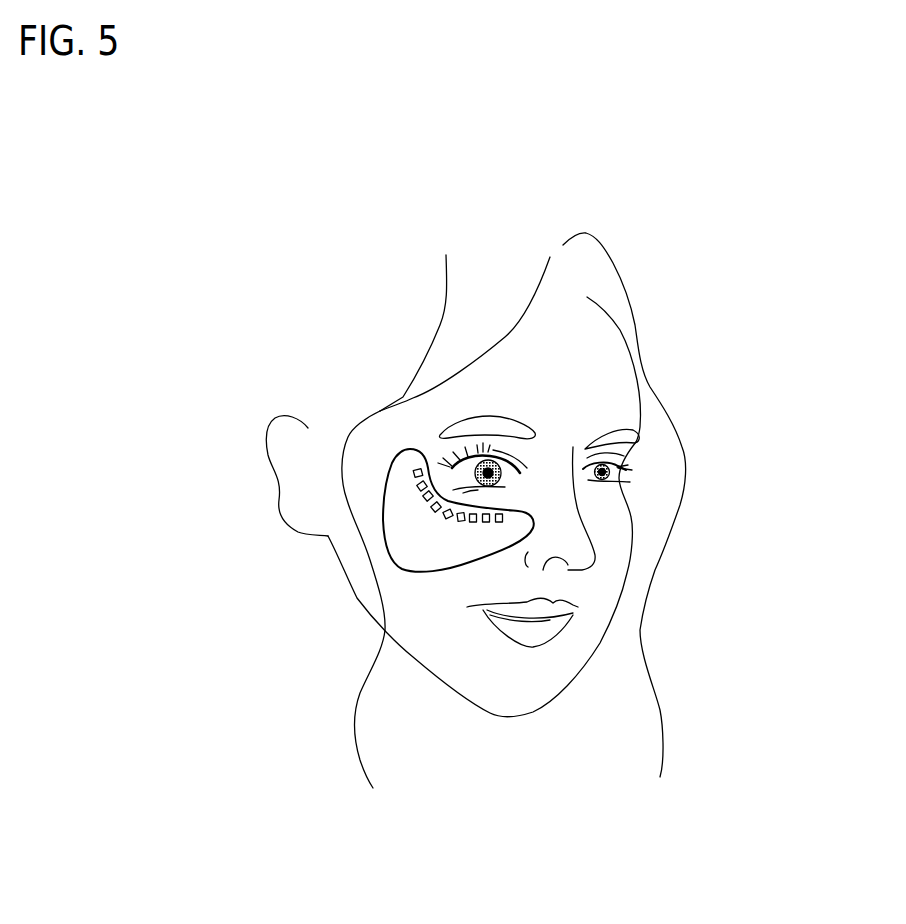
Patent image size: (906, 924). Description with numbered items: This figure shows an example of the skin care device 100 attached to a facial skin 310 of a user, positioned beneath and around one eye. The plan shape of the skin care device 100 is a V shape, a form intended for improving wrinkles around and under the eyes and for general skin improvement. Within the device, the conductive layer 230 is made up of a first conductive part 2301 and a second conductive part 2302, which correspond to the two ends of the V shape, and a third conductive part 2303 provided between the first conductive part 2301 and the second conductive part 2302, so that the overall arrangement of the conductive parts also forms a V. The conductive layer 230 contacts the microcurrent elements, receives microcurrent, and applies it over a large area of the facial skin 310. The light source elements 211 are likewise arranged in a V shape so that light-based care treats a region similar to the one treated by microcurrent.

The skin care device 100 is at (380, 448).
The light source elements 211 is at (418, 469).
The conductive layer 230 is at (607, 531).
The first conductive part 2301 is at (410, 480).
The second conductive part 2302 is at (517, 520).
The third conductive part 2303 is at (423, 553).
The facial skin 310 is at (351, 605).